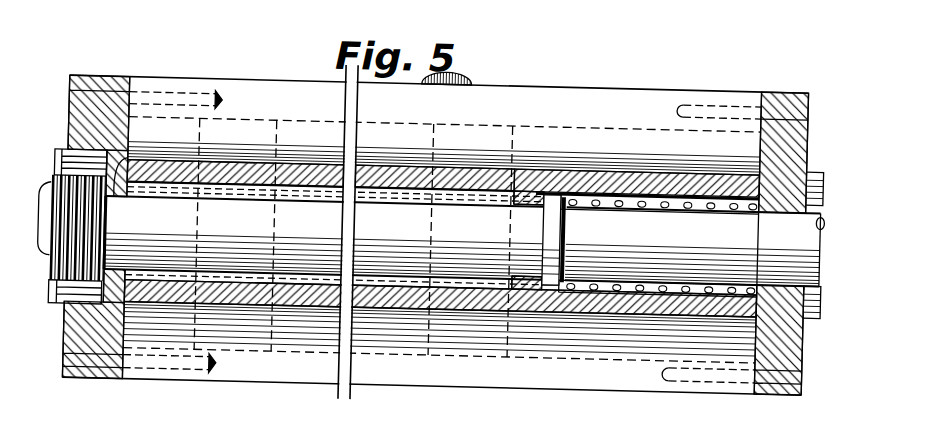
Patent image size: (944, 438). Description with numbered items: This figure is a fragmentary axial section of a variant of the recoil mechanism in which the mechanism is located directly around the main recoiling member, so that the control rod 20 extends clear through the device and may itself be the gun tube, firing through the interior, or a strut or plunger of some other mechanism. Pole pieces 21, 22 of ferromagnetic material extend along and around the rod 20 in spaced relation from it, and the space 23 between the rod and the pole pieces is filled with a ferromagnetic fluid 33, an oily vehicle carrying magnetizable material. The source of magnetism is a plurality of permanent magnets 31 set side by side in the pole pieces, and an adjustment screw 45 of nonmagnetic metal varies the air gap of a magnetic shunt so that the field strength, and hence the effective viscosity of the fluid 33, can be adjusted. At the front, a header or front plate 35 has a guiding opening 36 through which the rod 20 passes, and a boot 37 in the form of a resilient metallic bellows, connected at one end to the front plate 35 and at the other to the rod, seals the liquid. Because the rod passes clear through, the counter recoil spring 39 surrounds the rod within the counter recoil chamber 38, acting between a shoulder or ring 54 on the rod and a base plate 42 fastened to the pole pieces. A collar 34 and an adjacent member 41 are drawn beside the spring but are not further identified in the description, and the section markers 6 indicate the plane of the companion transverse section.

The control rod 20 is at (324, 238).
The pole piece 21 is at (530, 176).
The pole piece 22 is at (487, 301).
The space between rod and pole pieces 23 is at (369, 186).
The permanent magnets 31 is at (480, 138).
The ferromagnetic fluid 33 is at (237, 188).
The collar 34 is at (543, 264).
The header 35 is at (69, 131).
The guiding opening 36 is at (116, 201).
The boot 37 is at (38, 193).
The counter recoil chamber 38 is at (742, 282).
The counter recoil spring 39 is at (645, 209).
The roller race (41') 41 is at (583, 191).
The base plate 42 is at (784, 86).
The adjustment screw 45 is at (460, 80).
The shoulder or ring 54 is at (751, 191).
The section line 6- 6 is at (211, 127).